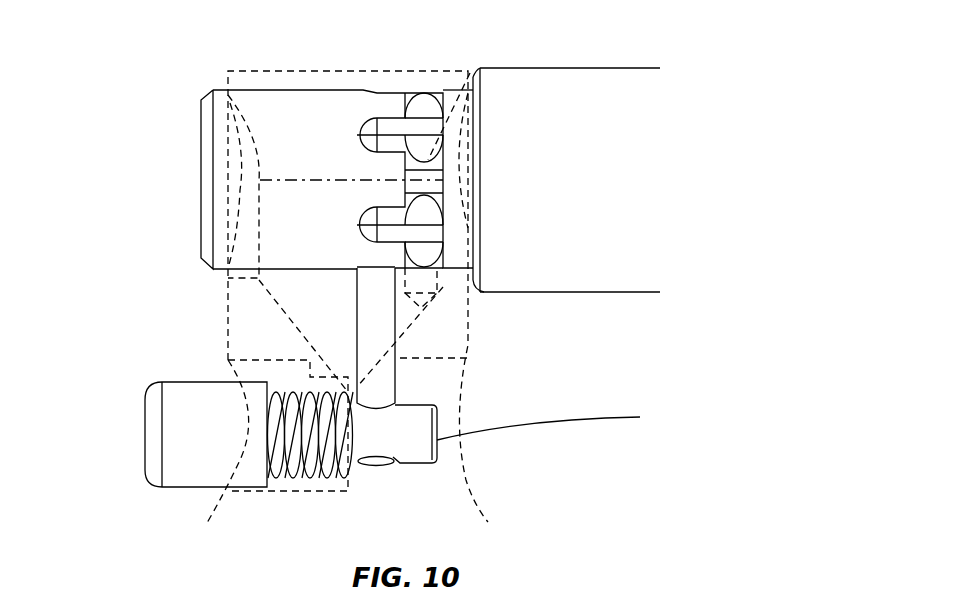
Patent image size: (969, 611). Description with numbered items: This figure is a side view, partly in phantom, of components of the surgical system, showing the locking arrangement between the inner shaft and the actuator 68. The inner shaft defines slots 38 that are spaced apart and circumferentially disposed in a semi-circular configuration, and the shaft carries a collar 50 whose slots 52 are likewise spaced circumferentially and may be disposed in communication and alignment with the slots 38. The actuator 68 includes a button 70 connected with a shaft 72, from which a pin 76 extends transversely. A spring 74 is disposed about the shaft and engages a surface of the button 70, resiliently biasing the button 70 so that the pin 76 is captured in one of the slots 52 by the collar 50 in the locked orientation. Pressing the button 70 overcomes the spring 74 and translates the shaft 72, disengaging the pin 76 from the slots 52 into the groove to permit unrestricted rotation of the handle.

The slots 38 is at (425, 232).
The collar 50 is at (280, 103).
The slots 52 is at (372, 217).
The actuator 68 is at (128, 396).
The button 70 is at (182, 427).
The shaft 72 is at (422, 438).
The spring 74 is at (350, 468).
The pin 76 is at (380, 320).